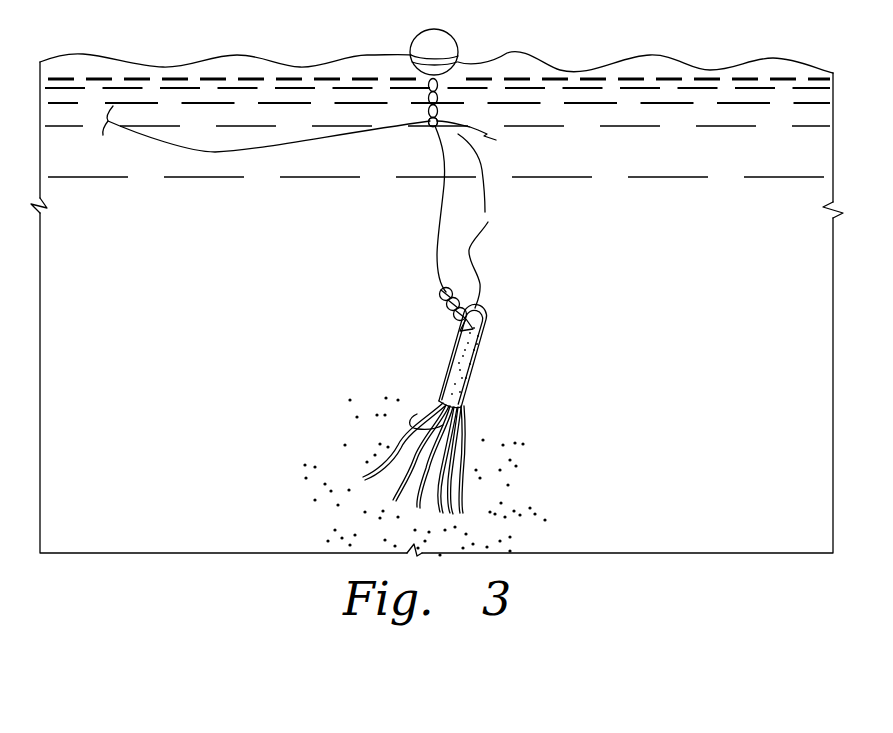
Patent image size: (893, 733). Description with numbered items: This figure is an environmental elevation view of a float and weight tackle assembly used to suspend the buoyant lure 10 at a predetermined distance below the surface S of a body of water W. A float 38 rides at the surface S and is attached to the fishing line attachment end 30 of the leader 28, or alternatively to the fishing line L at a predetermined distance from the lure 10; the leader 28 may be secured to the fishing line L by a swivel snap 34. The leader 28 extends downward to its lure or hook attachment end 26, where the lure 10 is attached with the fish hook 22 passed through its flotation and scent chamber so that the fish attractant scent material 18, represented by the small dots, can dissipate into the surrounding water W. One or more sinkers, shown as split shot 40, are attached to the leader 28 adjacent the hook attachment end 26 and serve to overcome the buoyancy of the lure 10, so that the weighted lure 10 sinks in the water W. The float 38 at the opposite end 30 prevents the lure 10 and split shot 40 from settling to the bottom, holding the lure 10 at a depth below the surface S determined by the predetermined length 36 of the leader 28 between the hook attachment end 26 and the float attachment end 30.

The lure 10 is at (486, 360).
The fish attractant scent material 18 is at (545, 494).
The fish hook 22 is at (404, 427).
The hook attachment end 26 is at (460, 329).
The leader 28 is at (437, 224).
The fishing line attachment end 30 is at (430, 126).
The swivel snap 34 is at (482, 140).
The predetermined length 36 is at (492, 221).
The float 38 is at (409, 42).
The split shot 40 is at (453, 315).
The fishing line L is at (163, 145).
The surface S is at (697, 68).
The body of water W is at (712, 295).